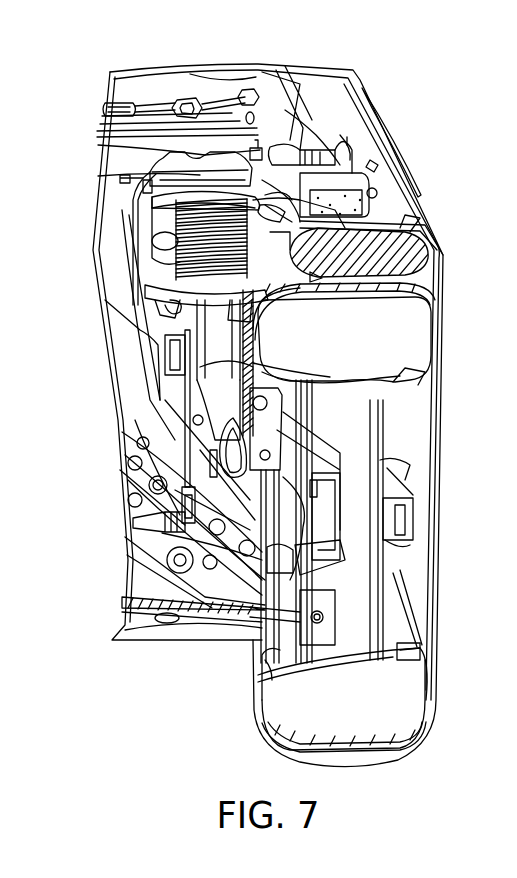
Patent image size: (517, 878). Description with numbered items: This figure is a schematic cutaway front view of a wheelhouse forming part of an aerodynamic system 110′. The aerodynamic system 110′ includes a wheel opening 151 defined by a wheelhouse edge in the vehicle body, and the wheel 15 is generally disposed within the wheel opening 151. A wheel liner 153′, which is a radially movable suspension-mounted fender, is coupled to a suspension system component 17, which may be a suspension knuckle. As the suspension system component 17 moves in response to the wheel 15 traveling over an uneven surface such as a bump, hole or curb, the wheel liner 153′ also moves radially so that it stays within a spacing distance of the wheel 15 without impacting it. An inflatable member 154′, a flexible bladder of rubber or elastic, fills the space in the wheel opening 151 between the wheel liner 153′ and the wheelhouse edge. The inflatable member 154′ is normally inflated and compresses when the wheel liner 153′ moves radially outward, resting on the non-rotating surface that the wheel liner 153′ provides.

The aerodynamic system 110′ is at (88, 67).
The wheel 15 is at (413, 345).
The suspension system component 17 is at (215, 340).
The wheel opening 151 is at (147, 272).
The wheel liner 153′ is at (310, 272).
The inflatable member 154′ is at (403, 253).